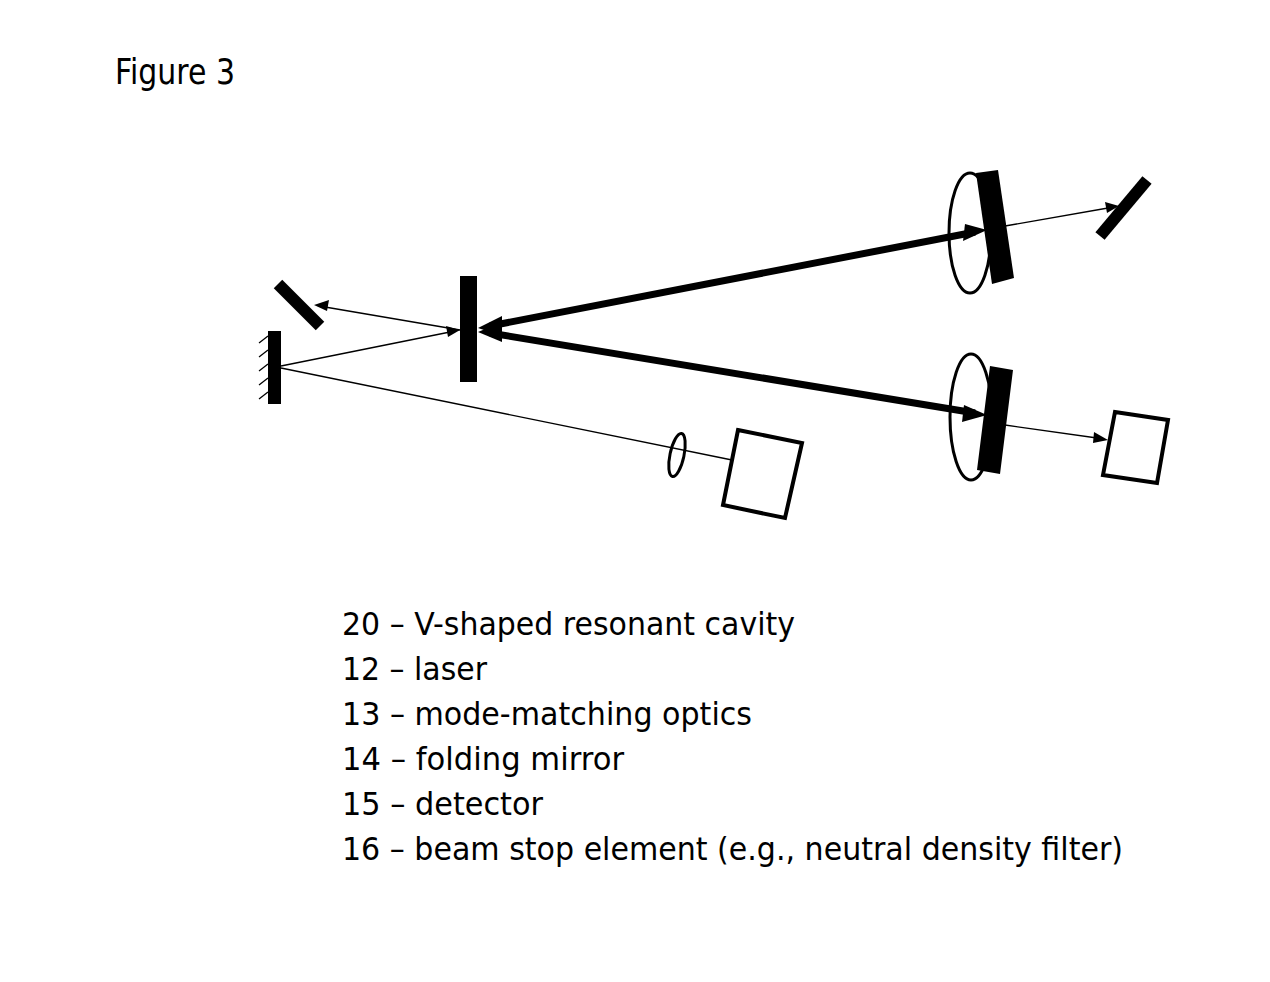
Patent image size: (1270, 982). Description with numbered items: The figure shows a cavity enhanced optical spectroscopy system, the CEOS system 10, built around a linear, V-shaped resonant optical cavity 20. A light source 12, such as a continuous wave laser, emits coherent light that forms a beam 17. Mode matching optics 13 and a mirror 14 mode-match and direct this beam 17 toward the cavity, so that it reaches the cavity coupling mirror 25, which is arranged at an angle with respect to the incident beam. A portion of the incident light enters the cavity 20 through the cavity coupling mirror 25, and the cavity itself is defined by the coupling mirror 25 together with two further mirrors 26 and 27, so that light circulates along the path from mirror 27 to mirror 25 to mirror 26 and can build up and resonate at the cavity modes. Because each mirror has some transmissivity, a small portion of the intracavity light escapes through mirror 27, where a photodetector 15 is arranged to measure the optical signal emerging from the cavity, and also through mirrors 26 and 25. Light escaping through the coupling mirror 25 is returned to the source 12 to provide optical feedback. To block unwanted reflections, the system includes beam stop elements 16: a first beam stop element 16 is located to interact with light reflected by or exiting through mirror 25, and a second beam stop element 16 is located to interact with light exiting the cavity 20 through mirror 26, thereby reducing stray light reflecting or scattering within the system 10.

The CEOS system 10 is at (609, 168).
The light source 12 is at (782, 493).
The mode matching optics 13 is at (685, 481).
The mirror 14 is at (359, 380).
The photodetector 15 is at (1109, 465).
The beam stop element 16 is at (712, 228).
The beam 17 is at (506, 419).
The optical cavity 20 is at (732, 323).
The cavity coupling mirror 25 is at (493, 320).
The mirror 26 is at (969, 225).
The mirror 27 is at (1006, 416).